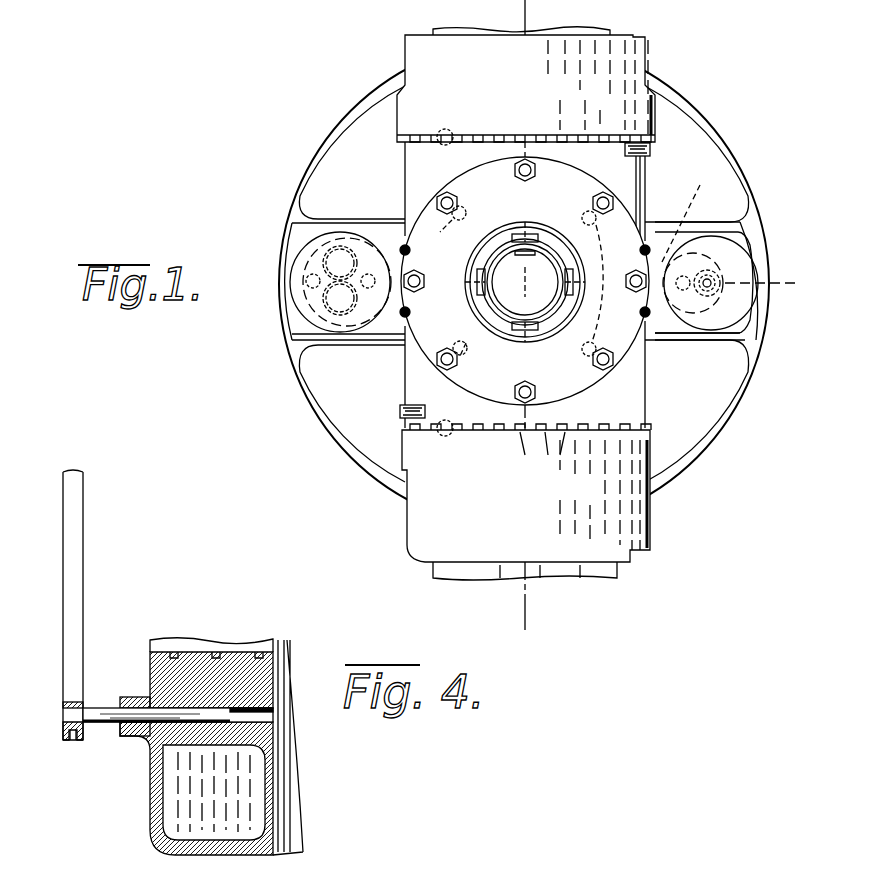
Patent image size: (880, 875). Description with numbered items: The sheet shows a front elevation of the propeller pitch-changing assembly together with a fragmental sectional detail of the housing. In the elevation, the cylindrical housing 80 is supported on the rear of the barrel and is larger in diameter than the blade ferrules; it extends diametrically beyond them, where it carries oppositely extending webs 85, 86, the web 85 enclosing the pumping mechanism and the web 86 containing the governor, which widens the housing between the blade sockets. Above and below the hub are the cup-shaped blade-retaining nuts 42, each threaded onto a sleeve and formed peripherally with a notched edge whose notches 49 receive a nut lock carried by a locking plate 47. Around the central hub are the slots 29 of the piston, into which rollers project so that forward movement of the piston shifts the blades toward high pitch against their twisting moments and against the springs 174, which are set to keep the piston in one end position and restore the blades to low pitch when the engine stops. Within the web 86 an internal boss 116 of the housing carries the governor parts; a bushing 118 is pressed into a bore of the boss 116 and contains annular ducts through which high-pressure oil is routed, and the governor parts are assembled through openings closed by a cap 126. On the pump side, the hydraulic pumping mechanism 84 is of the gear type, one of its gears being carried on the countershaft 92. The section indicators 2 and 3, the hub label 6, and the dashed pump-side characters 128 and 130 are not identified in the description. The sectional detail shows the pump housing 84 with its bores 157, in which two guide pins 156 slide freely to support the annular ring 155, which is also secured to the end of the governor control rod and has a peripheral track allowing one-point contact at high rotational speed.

In FIG. 1, the section line 2- 2 is at (550, 19).
In FIG. 1, the section line 3- 3 is at (250, 255).
In FIG. 1, the hub 6 is at (525, 281).
In FIG. 1, the slots 29 is at (458, 204).
In FIG. 1, the blade retaining cup-shaped nut 42 is at (526, 303).
In FIG. 1, the locking plate 47 is at (650, 150).
In FIG. 1, the notches 49 is at (488, 138).
In FIG. 1, the housing 80 is at (735, 152).
In FIG. 4, the housing 80 is at (255, 808).
In FIG. 4, the hydraulic pumping mechanism 84 is at (283, 662).
In FIG. 1, the web 85 is at (371, 340).
In FIG. 1, the web 86 is at (682, 340).
In FIG. 4, the countershaft 92 is at (450, 855).
In FIG. 1, the boss 116 is at (688, 216).
In FIG. 1, the bushing 118 is at (712, 312).
In FIG. 1, the cap 126 is at (733, 312).
In FIG. 1, the pump housing 128 is at (318, 320).
In FIG. 1, the pump gears 130 is at (310, 258).
In FIG. 4, the annular member or ring 155 is at (76, 588).
In FIG. 4, the guide pins 156 is at (100, 724).
In FIG. 4, the bores 157 is at (262, 716).
In FIG. 1, the springs 174 is at (528, 293).